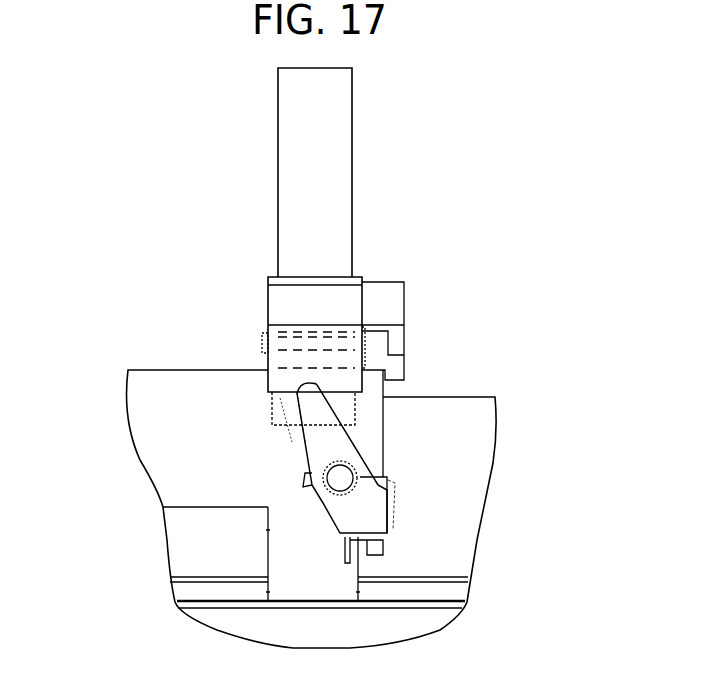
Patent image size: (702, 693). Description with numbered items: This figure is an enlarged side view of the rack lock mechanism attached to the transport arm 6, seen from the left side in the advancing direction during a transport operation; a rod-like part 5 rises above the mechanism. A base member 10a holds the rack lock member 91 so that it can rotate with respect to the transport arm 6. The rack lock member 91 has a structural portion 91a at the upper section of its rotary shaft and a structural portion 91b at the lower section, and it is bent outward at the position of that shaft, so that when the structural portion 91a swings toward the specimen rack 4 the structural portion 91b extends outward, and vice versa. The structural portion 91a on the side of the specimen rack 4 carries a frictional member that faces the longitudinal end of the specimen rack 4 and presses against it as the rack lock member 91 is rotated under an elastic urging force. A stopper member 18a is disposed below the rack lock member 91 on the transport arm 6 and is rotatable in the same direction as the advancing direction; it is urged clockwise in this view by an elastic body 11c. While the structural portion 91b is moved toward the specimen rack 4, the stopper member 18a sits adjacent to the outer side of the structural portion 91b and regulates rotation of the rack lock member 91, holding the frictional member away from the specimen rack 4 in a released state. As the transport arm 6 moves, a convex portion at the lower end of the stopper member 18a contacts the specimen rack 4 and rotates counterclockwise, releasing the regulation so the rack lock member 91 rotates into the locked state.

The rod 5 is at (340, 133).
The transport arm 6 is at (160, 378).
The specimen rack 4 is at (283, 555).
The rack lock member 91 is at (277, 364).
The structural portion 91a is at (275, 303).
The structural portion 91b is at (275, 365).
The base member 10a is at (270, 413).
The stopper member 18a is at (333, 447).
The elastic body 11c is at (388, 477).